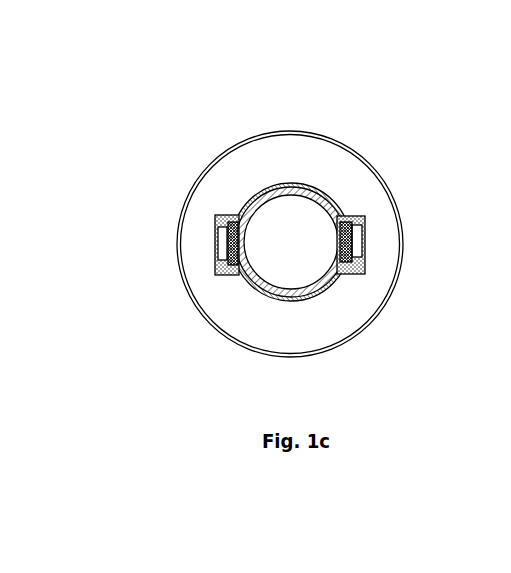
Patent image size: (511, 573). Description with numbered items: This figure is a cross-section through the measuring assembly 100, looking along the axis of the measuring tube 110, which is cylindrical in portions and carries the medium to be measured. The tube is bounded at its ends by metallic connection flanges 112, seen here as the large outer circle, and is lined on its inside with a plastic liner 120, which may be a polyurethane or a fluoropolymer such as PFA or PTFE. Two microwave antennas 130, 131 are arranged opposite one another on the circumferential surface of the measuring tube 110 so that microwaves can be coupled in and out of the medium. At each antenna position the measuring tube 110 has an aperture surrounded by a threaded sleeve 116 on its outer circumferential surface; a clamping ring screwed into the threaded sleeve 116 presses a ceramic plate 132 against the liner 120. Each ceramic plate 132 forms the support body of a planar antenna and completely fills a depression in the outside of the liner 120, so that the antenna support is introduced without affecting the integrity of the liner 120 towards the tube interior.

The measuring assembly 100 is at (150, 110).
The measuring tube 110 is at (330, 190).
The connection flanges 112 is at (262, 148).
The threaded sleeve 116 is at (226, 214).
The liner 120 is at (267, 296).
The first microwave antenna 130 is at (364, 251).
The second microwave antenna 131 is at (216, 246).
The ceramic plate 132 is at (240, 211).